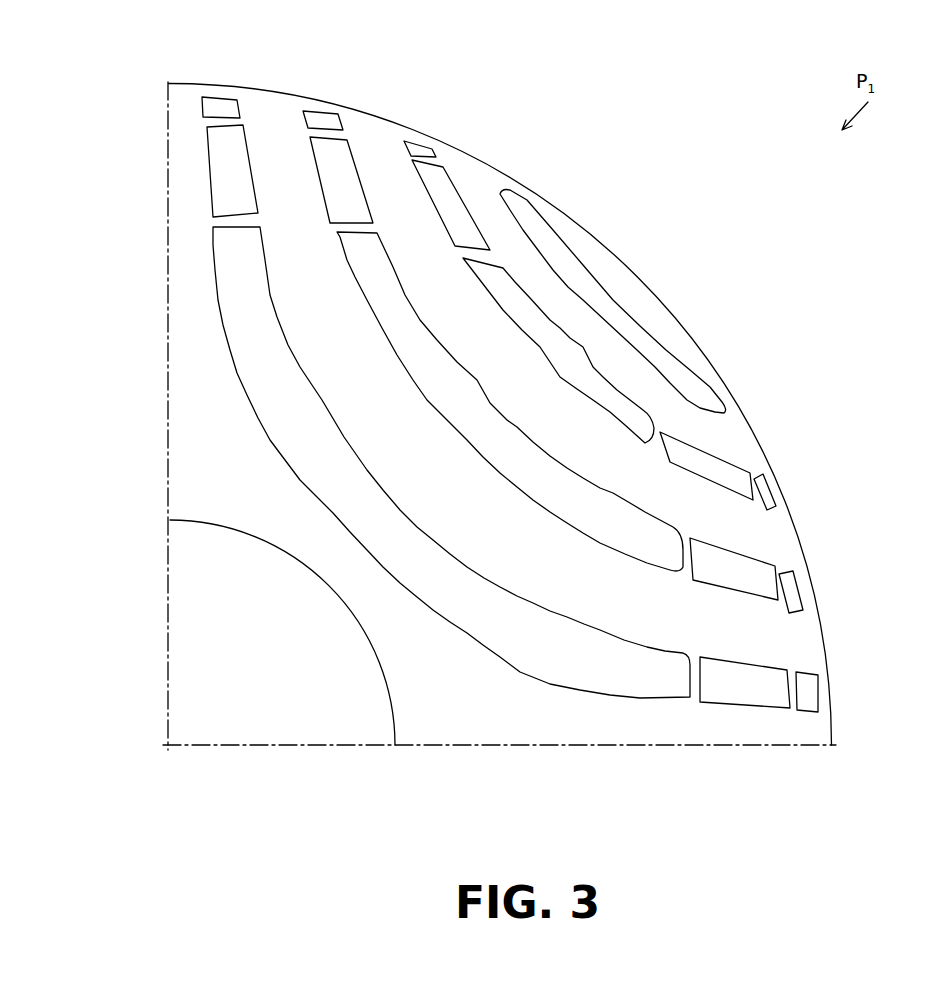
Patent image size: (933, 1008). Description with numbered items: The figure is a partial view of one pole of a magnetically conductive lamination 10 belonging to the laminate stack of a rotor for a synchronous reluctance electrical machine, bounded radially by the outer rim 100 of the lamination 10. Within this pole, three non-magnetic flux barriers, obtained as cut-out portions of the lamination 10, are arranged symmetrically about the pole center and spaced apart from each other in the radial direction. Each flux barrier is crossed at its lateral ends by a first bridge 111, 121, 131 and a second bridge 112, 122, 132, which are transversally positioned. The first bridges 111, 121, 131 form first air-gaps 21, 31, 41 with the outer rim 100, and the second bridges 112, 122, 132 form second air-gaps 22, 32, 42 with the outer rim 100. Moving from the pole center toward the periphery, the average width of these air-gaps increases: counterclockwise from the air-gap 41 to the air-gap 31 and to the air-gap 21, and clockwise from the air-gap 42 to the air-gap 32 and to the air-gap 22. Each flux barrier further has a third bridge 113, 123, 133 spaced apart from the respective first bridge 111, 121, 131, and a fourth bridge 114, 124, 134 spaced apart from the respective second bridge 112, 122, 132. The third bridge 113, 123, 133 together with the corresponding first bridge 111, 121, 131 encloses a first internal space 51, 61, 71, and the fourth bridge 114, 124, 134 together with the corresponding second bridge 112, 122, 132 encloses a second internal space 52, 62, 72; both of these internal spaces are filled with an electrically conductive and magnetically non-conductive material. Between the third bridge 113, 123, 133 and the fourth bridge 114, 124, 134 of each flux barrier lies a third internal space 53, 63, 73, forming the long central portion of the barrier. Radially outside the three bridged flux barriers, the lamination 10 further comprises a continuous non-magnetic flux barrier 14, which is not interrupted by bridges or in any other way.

The magnetically conductive lamination 10 is at (183, 88).
The outer rim 100 is at (490, 167).
The continuous non-magnetic flux barrier 14 is at (593, 293).
The first air-gap 21 is at (223, 107).
The second air-gap 22 is at (815, 693).
The first air-gap 31 is at (330, 110).
The second air-gap 32 is at (807, 602).
The first air-gap 41 is at (433, 148).
The second air-gap 42 is at (771, 497).
The first internal space 51 is at (242, 170).
The second internal space 52 is at (741, 690).
The third internal space 53 is at (371, 505).
The first internal space 61 is at (348, 182).
The second internal space 62 is at (736, 582).
The third internal space 63 is at (479, 417).
The first internal space 71 is at (452, 202).
The second internal space 72 is at (711, 472).
The third internal space 73 is at (541, 332).
The first bridge 111 is at (217, 125).
The second bridge 112 is at (790, 700).
The third bridge 113 is at (227, 226).
The fourth bridge 114 is at (693, 678).
The first bridge 121 is at (343, 133).
The second bridge 122 is at (787, 580).
The third bridge 123 is at (357, 233).
The fourth bridge 124 is at (697, 580).
The first bridge 131 is at (441, 160).
The second bridge 132 is at (757, 480).
The third bridge 133 is at (487, 258).
The fourth bridge 134 is at (660, 430).